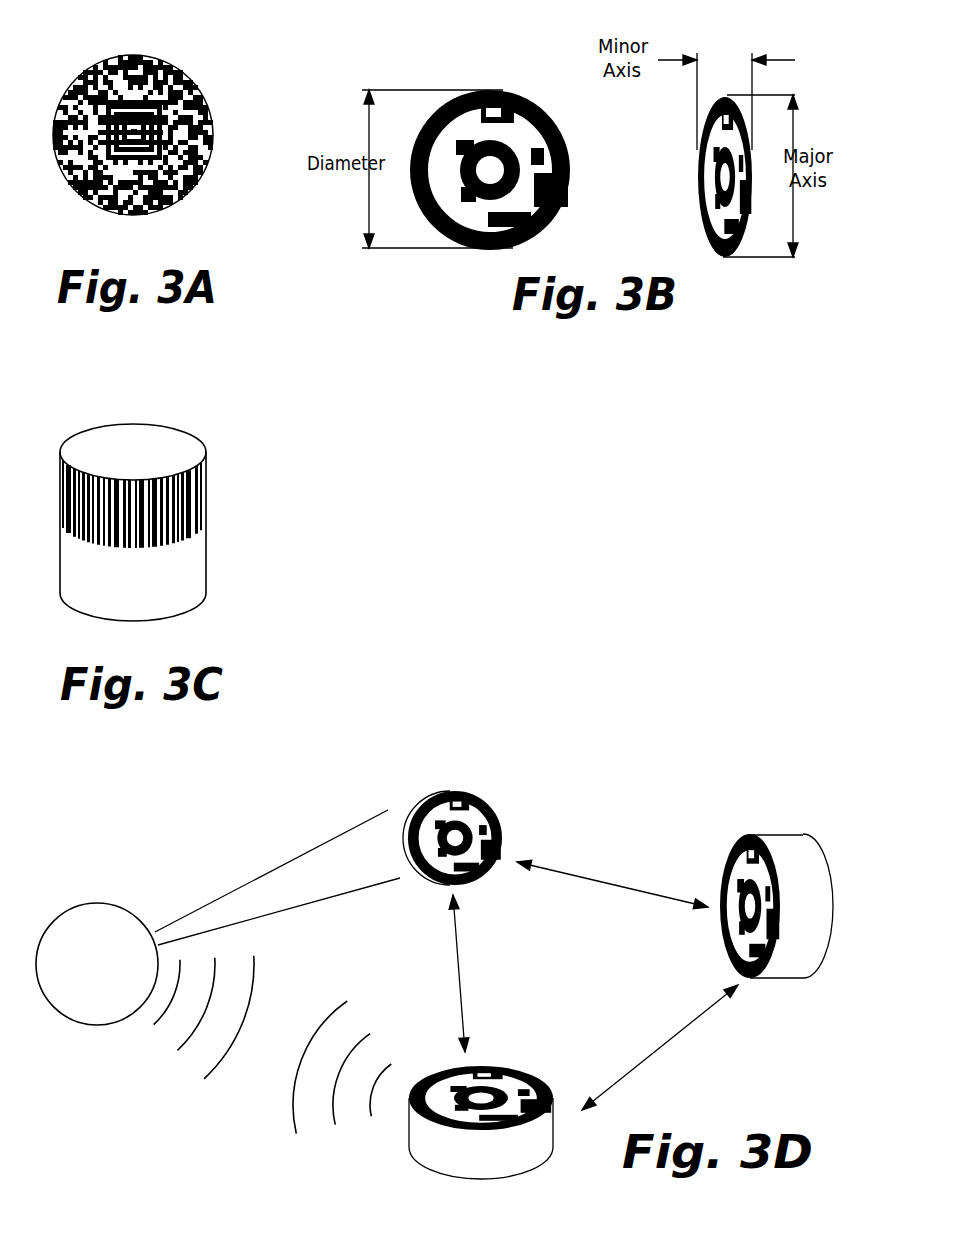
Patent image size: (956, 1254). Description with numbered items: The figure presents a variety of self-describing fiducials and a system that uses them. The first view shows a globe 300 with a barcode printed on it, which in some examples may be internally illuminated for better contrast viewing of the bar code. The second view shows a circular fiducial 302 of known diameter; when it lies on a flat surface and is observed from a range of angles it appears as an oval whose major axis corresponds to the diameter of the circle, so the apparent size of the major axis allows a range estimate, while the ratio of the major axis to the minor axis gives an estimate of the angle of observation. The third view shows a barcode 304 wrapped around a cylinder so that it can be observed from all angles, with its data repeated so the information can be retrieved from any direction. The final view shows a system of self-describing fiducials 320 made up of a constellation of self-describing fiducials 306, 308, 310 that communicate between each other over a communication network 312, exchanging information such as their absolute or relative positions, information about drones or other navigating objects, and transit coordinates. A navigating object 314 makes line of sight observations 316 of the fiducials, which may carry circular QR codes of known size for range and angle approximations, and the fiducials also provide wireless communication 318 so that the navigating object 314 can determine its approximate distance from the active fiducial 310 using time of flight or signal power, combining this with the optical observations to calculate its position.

In FIG. 3A, the globe 300 is at (93, 72).
In FIG. 3B, the circular fiducial 302 is at (507, 92).
In FIG. 3C, the barcode 304 is at (185, 438).
In FIG. 3D, the self-describing fiducial 306 is at (462, 790).
In FIG. 3D, the self-describing fiducial 308 is at (772, 838).
In FIG. 3D, the active fiducial 310 is at (498, 1169).
In FIG. 3D, the communication network 312 is at (593, 985).
In FIG. 3D, the navigating object 314 is at (80, 1011).
In FIG. 3D, the line of sight observations 316 is at (275, 876).
In FIG. 3D, the wireless communication 318 is at (259, 1065).
In FIG. 3D, the system of self-describing fiducials 320 is at (633, 762).